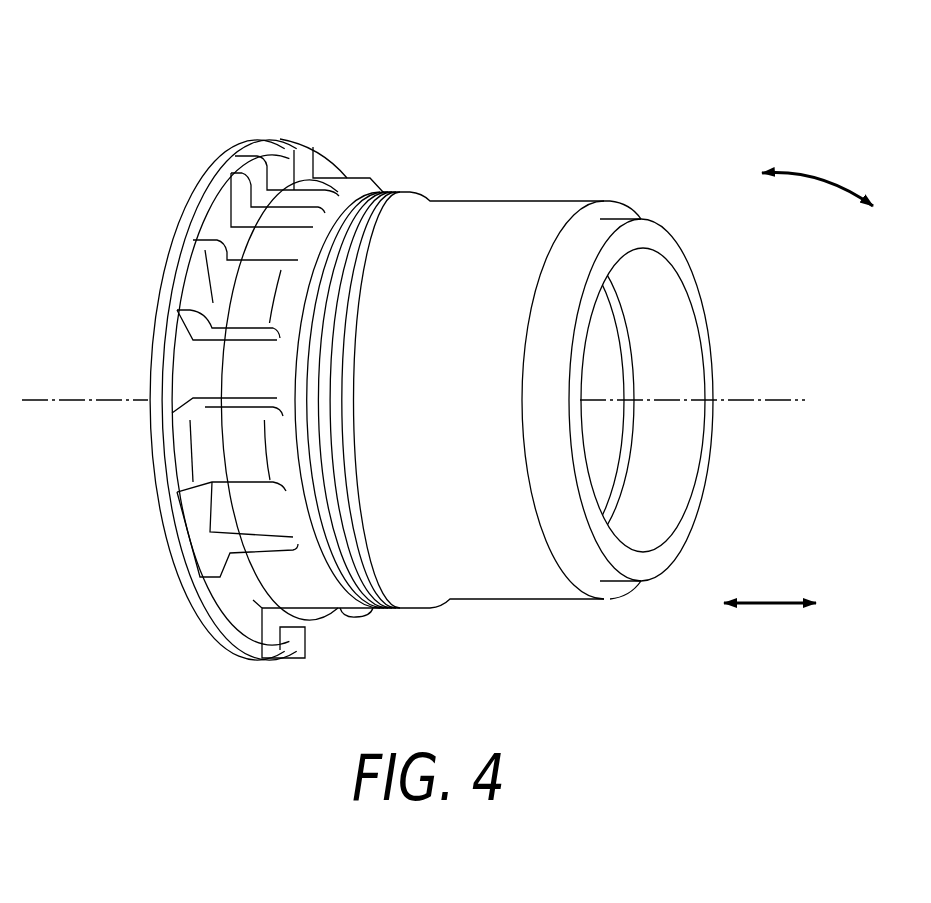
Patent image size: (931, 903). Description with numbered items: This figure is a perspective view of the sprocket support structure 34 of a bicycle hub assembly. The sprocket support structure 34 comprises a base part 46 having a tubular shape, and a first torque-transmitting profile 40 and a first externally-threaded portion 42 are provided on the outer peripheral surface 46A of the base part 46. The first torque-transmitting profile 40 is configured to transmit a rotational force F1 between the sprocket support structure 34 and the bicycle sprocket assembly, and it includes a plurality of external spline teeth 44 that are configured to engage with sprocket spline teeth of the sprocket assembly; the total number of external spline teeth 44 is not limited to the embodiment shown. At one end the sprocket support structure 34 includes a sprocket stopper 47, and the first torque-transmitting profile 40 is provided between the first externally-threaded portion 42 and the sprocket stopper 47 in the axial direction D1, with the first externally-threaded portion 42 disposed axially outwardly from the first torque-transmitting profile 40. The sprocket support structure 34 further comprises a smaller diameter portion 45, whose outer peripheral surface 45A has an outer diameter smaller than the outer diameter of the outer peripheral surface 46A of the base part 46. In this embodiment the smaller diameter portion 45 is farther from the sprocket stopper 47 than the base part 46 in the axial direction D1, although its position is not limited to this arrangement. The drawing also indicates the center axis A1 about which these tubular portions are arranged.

The sprocket support structure 34 is at (470, 88).
The first torque-transmitting profile 40 is at (358, 152).
The first externally-threaded portion 42 is at (405, 191).
The external spline tooth 44 is at (286, 203).
The smaller diameter portion 45 is at (653, 241).
The outer peripheral surface 45A is at (616, 222).
The base part 46 is at (481, 201).
The outer peripheral surface 46A is at (530, 218).
The sprocket stopper 47 is at (237, 163).
The center axis A1 is at (768, 393).
The axial direction D1 is at (771, 620).
The rotational force F1 is at (830, 182).